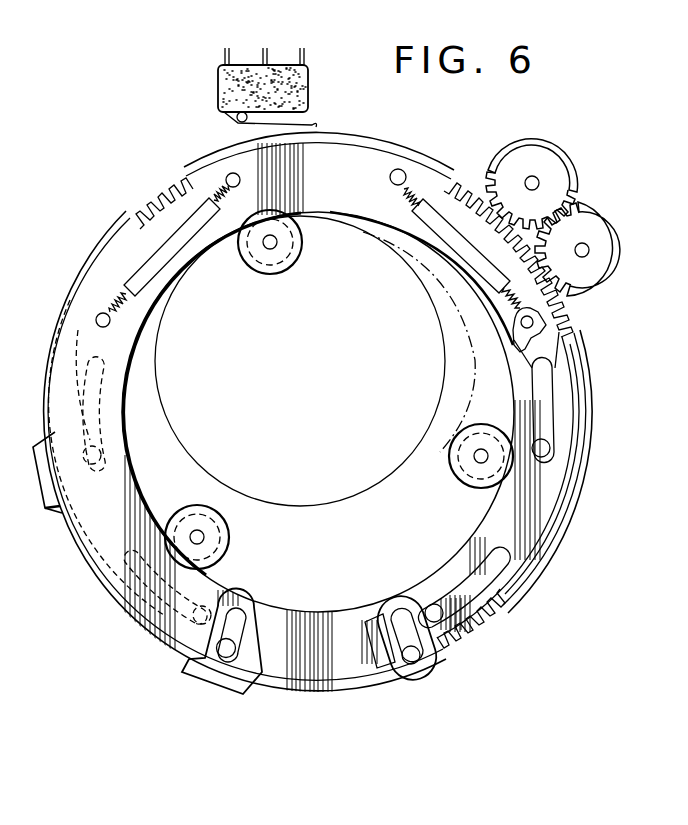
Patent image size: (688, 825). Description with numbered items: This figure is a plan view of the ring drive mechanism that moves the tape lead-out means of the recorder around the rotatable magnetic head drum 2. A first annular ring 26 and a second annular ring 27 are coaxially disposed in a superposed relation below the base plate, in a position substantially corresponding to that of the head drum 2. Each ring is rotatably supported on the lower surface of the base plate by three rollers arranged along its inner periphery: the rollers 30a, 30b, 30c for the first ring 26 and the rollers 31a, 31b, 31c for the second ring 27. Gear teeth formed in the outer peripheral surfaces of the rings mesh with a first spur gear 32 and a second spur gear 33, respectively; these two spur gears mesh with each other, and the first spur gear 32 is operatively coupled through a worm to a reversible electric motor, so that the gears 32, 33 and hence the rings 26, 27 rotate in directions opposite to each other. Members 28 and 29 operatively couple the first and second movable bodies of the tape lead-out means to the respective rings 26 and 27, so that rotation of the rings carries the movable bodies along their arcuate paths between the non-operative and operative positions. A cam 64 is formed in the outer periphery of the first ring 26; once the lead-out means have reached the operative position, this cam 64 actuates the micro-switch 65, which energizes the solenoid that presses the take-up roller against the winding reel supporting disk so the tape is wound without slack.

The rotatable head drum 2 is at (333, 222).
The first annular ring 26 is at (358, 688).
The second annular ring 27 is at (300, 690).
The coupling member 28 is at (213, 684).
The coupling member 29 is at (420, 675).
The roller 30a is at (223, 515).
The roller 30b is at (302, 248).
The roller 30c is at (478, 486).
The roller 31a is at (223, 548).
The roller 31b is at (254, 265).
The roller 31c is at (462, 478).
The first spur gear 32 is at (610, 218).
The second spur gear 33 is at (573, 161).
The cam 64 is at (48, 503).
The micro-switch 65 is at (218, 93).